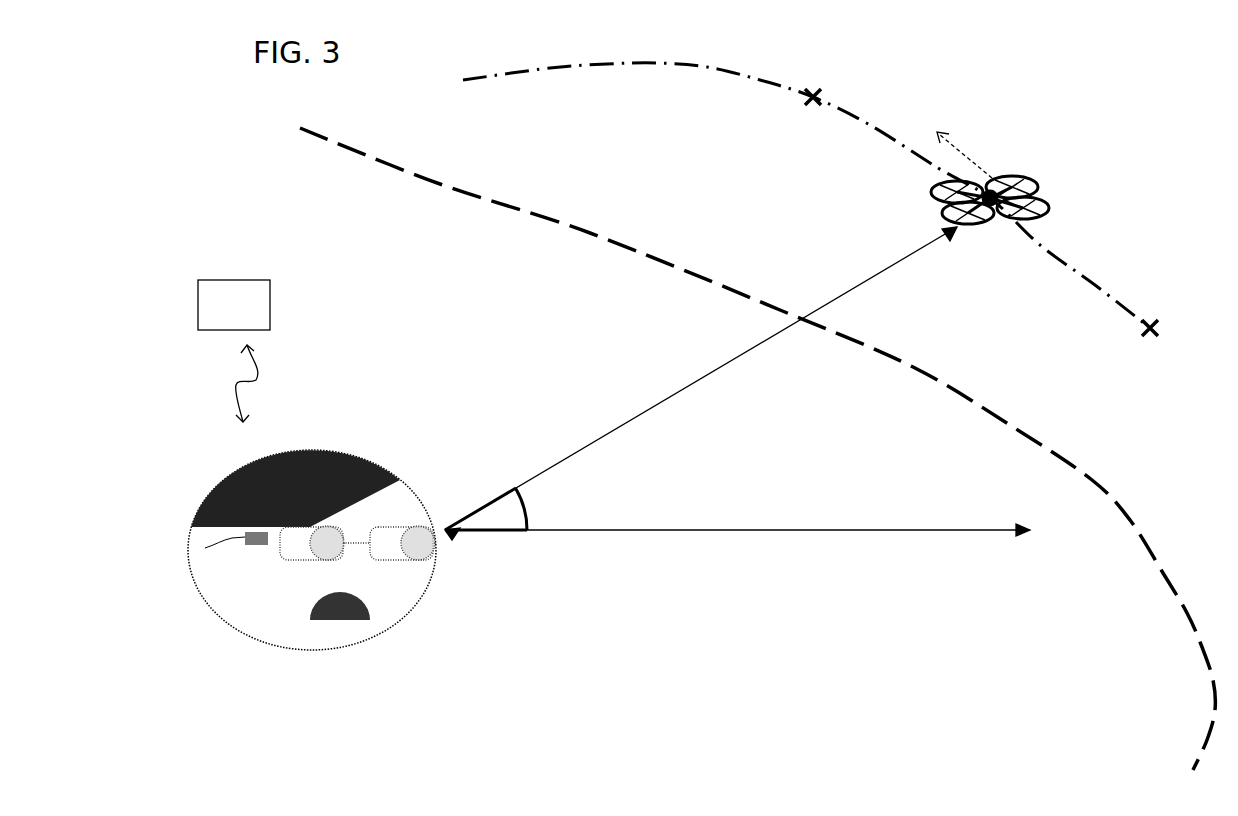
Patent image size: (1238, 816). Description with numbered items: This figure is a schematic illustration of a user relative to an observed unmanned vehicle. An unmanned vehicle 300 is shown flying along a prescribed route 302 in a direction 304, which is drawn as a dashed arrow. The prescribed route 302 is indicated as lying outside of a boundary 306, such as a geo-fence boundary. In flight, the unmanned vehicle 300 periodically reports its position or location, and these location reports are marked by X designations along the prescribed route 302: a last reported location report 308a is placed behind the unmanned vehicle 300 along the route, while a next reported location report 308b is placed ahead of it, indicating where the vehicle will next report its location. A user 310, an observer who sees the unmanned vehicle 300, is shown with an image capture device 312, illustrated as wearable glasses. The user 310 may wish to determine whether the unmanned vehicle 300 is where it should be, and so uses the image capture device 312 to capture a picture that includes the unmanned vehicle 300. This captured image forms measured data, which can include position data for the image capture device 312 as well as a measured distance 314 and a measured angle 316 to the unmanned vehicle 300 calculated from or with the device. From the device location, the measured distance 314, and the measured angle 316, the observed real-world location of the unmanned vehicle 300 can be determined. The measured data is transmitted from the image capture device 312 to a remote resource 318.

The unmanned vehicle 300 is at (1018, 178).
The prescribed route 302 is at (712, 68).
The direction 304 is at (960, 152).
The boundary 306 is at (1186, 622).
The last reported location report 308a is at (1160, 323).
The next reported location report 308b is at (825, 88).
The user 310 is at (396, 612).
The image capture device 312 is at (268, 545).
The measured distance 314 is at (690, 385).
The measured angle 316 is at (508, 515).
The remote resource 318 is at (234, 351).